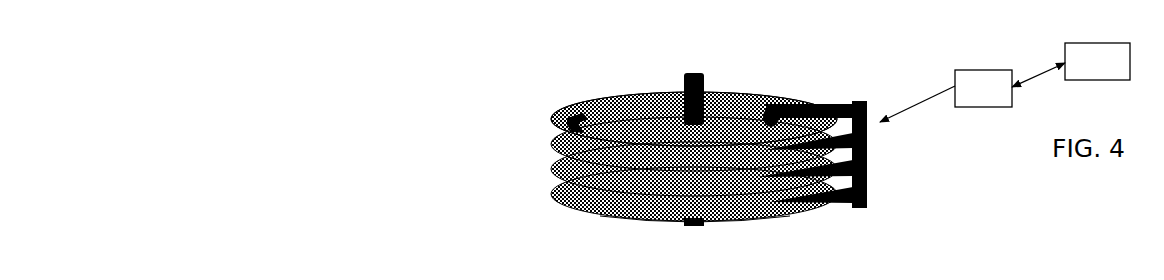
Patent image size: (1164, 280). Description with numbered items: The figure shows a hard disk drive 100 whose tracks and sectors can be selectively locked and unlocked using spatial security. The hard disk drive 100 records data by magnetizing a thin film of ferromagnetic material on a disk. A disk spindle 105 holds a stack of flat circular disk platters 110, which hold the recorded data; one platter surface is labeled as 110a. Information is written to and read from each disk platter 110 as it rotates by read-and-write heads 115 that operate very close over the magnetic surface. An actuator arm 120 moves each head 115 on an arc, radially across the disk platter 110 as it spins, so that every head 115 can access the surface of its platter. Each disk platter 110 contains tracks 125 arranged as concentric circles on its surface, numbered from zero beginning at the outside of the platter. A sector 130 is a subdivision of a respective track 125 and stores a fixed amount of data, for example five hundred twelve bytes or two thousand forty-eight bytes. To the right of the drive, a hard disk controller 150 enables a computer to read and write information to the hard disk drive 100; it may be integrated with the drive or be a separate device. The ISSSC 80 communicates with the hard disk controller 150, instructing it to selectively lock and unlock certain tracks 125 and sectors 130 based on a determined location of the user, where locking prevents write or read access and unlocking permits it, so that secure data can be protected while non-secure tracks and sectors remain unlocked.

The hard disk drive 100 is at (415, 79).
The disk spindle 105 is at (679, 80).
The disk platters 110 is at (572, 170).
The disk surface 110a is at (768, 278).
The read-and-write heads 115 is at (764, 116).
The actuator arm 120 is at (816, 103).
The tracks 125 is at (622, 104).
The sector 130 is at (566, 115).
The hard disk controller 150 is at (982, 70).
The ISSSC 80 is at (1103, 80).